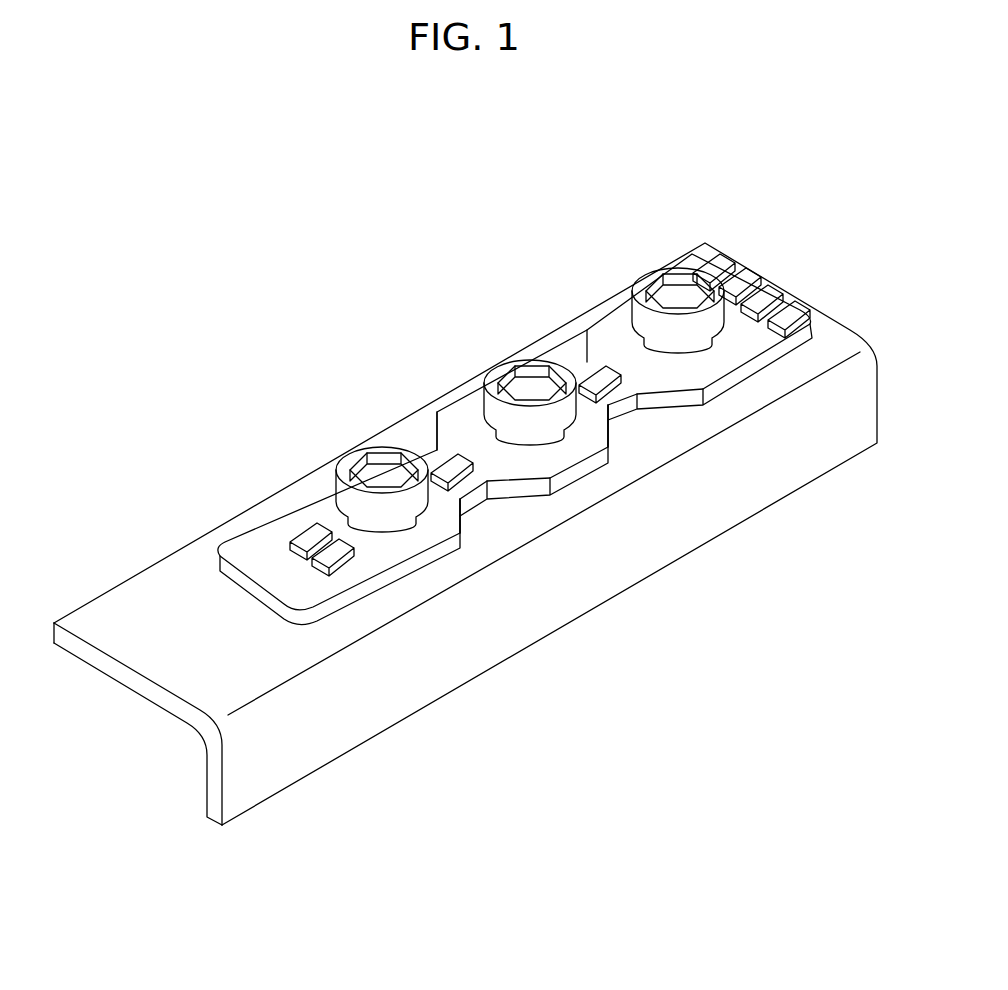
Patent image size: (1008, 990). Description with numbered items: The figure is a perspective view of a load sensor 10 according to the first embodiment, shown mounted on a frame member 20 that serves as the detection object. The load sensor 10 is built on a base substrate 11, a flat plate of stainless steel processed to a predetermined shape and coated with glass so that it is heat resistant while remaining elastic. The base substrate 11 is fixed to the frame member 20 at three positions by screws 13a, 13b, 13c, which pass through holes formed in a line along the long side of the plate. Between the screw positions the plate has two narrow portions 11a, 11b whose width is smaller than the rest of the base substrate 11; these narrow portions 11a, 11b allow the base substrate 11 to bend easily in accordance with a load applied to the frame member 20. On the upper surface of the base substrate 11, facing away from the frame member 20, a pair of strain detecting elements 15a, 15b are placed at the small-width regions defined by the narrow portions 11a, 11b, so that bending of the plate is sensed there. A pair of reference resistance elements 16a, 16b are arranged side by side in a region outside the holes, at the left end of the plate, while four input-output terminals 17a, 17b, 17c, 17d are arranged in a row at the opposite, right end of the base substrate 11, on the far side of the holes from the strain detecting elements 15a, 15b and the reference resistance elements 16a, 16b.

The load sensor 10 is at (230, 360).
The base substrate 11 is at (723, 355).
The narrow portion 11a is at (426, 446).
The narrow portion 11b is at (577, 358).
The screw 13a is at (340, 450).
The screw 13b is at (652, 270).
The screw 13c is at (500, 367).
The strain detecting element 15a is at (450, 470).
The strain detecting element 15b is at (600, 392).
The reference resistance element 16a is at (312, 538).
The reference resistance element 16b is at (340, 556).
The input-output terminal 17a is at (712, 258).
The input-output terminal 17b is at (745, 285).
The input-output terminal 17c is at (790, 302).
The input-output terminal 17d is at (812, 304).
The frame member 20 is at (172, 570).